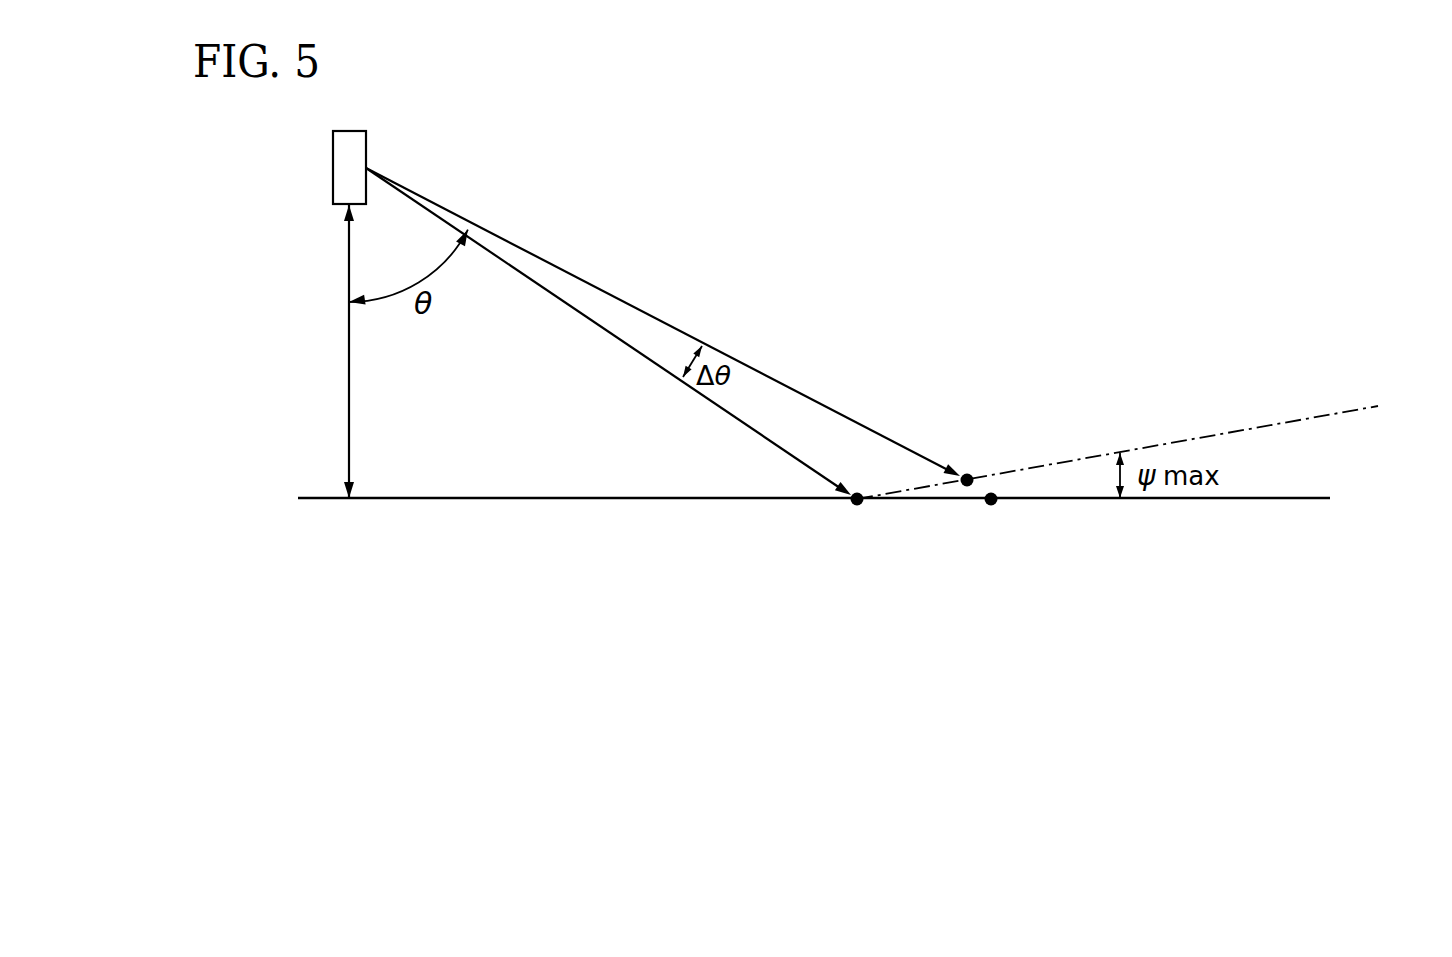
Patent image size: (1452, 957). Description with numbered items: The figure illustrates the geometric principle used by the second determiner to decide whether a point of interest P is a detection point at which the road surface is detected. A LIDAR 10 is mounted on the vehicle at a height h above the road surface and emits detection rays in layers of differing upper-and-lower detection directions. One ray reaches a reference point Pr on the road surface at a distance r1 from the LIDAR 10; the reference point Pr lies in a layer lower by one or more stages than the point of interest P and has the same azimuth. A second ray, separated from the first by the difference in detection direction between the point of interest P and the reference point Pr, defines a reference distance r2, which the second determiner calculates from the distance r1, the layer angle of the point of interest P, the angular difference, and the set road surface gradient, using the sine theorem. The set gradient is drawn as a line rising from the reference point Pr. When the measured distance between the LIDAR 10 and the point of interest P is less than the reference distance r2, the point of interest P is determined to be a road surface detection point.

The LIDAR 10 is at (333, 165).
The mounting height of the sensor h is at (334, 351).
The distance between the LIDAR and the reference point r1 is at (596, 325).
The reference distance r2 is at (835, 410).
The reference point Pr is at (857, 506).
The point of interest P is at (991, 506).